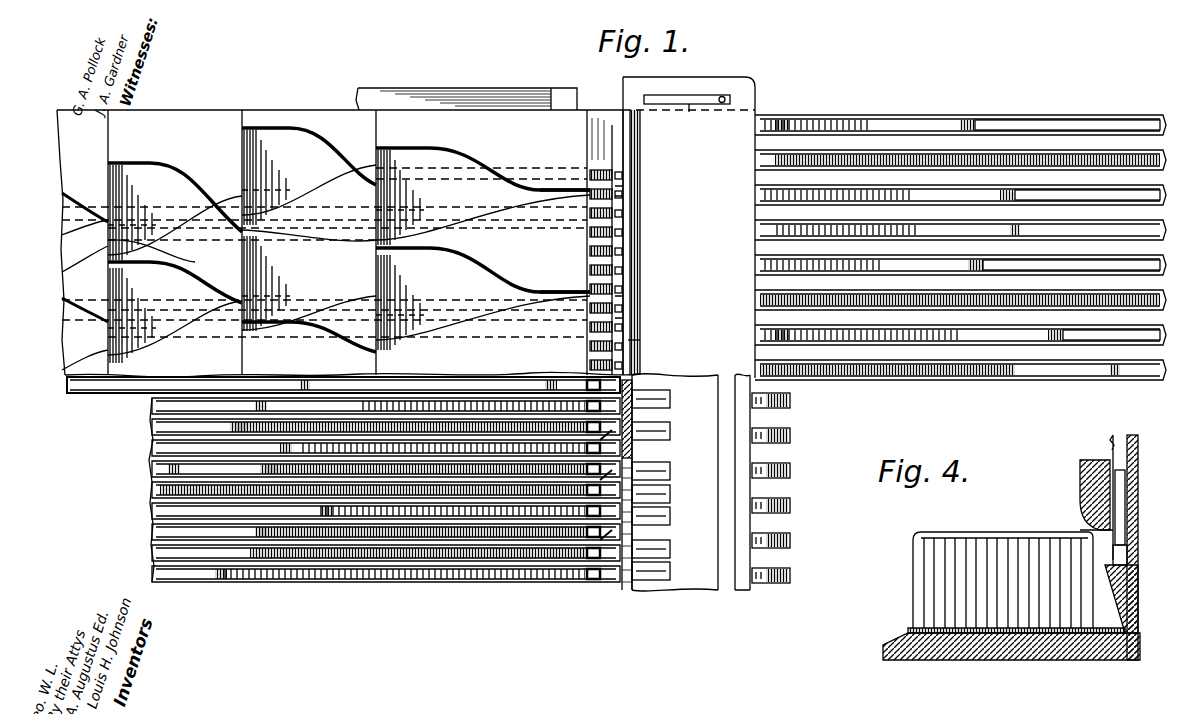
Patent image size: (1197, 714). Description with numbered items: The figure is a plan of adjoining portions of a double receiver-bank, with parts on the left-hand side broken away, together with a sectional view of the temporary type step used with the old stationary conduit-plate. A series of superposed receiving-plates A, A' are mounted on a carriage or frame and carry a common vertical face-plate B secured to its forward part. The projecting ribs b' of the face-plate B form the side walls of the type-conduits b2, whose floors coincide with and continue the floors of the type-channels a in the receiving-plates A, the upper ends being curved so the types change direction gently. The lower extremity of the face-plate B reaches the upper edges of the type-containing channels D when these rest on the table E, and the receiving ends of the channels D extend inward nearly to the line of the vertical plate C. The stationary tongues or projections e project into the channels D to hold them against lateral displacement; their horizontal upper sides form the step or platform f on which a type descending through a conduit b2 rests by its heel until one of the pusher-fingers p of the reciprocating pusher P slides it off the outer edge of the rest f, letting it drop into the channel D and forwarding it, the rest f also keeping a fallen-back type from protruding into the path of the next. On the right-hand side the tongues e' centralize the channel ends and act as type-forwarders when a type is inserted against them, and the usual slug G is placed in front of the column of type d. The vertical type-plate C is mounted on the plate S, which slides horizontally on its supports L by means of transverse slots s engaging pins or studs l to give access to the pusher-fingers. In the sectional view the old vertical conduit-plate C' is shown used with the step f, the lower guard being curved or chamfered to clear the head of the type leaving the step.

In FIG. 1, the receiving-plates A is at (175, 263).
In FIG. 1, the second harness frame A' is at (309, 240).
In FIG. 1, the face-plate B is at (605, 242).
In FIG. 4, the face-plate B is at (1084, 495).
In FIG. 1, the projecting ribs b' is at (638, 245).
In FIG. 1, the type-conduits b2 is at (652, 296).
In FIG. 1, the vertical plate C is at (656, 347).
In FIG. 4, the vertical conduit-plate C' is at (1132, 547).
In FIG. 1, the type-containing channels D is at (616, 338).
In FIG. 4, the type-containing channels D is at (913, 592).
In FIG. 1, the needle d is at (380, 479).
In FIG. 4, the table E is at (1011, 657).
In FIG. 1, the slug G is at (911, 231).
In FIG. 1, the supports L is at (546, 86).
In FIG. 1, the pins or studs l is at (730, 99).
In FIG. 1, the transverse slots s is at (689, 106).
In FIG. 1, the plate S is at (689, 227).
In FIG. 1, the type-channels a is at (565, 245).
In FIG. 1, the stationary tongues or projections e is at (960, 230).
In FIG. 1, the tongues or projections e' is at (779, 488).
In FIG. 1, the step or platform f is at (606, 489).
In FIG. 4, the step or platform f is at (1127, 556).
In FIG. 1, the reciprocating pusher P is at (686, 483).
In FIG. 1, the pusher-fingers p is at (652, 550).